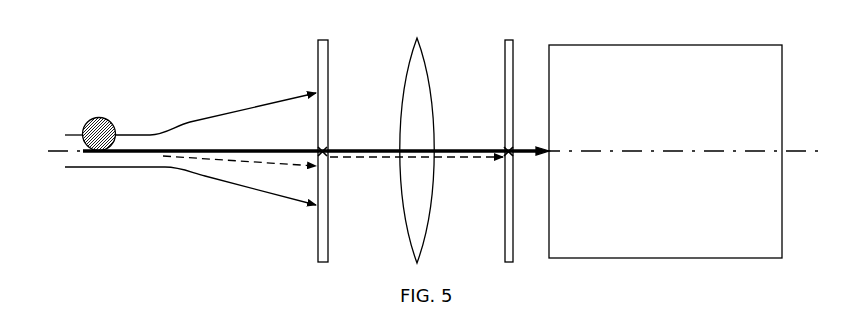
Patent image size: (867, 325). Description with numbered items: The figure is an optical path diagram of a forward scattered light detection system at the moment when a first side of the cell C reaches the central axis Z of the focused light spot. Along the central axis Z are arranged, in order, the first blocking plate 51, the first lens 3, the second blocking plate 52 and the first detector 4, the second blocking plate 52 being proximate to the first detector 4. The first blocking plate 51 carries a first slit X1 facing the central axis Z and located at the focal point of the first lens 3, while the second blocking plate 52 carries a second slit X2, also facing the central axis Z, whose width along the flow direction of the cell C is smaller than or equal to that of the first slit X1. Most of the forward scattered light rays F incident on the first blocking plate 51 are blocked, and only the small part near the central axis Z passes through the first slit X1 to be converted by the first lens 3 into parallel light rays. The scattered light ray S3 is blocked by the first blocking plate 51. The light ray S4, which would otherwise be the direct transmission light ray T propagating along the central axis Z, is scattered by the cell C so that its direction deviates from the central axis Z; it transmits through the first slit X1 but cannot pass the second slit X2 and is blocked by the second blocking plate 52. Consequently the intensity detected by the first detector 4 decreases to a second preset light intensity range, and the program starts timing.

The first lens 3 is at (413, 53).
The first detector 4 is at (647, 63).
The first blocking plate 51 is at (328, 48).
The second blocking plate 52 is at (513, 50).
The cell C is at (104, 132).
The forward scattered light rays F is at (174, 112).
The central axis Z is at (58, 152).
The direct transmission light ray T is at (466, 134).
The scattered light ray S3 is at (243, 163).
The scattered light ray S4 is at (378, 159).
The first slit X1 is at (323, 149).
The second slit X2 is at (510, 147).